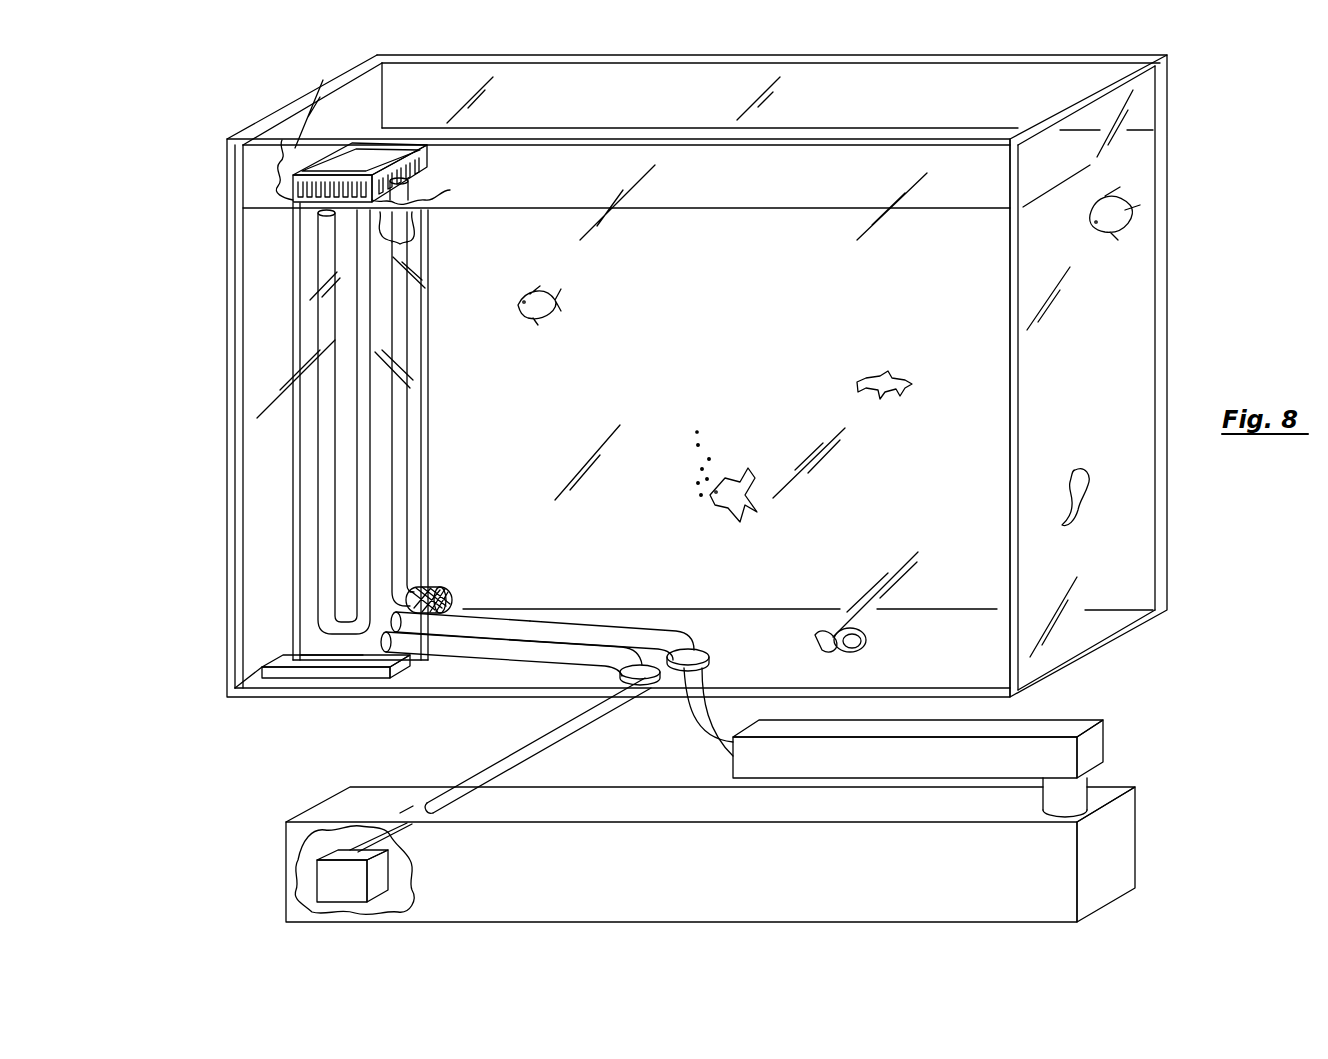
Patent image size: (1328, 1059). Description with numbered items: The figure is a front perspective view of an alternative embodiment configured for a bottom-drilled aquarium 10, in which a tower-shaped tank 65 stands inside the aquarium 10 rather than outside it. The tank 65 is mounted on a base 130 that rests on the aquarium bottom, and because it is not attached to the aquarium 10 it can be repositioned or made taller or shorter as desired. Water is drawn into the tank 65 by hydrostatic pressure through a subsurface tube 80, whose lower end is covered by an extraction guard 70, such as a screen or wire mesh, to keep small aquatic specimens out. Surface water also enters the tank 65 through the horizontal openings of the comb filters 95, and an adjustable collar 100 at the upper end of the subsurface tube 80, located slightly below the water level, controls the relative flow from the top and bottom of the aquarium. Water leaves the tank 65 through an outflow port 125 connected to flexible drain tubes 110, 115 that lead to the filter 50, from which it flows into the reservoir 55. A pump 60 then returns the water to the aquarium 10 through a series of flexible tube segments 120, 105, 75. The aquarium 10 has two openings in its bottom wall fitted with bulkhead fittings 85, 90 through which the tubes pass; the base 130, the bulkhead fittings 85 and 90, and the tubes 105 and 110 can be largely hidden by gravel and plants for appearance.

The aquarium 10 is at (1172, 305).
The filter 50 is at (1052, 722).
The reservoir 55 is at (374, 802).
The pump 60 is at (380, 873).
The tank 65 is at (295, 440).
The extraction guard 70 is at (447, 590).
The flexible tube segment 75 is at (330, 325).
The subsurface tube 80 is at (402, 449).
The bulkhead fitting 85 is at (703, 650).
The bulkhead fitting 90 is at (660, 690).
The comb filter 95 is at (343, 160).
The adjustable collar 100 is at (418, 186).
The flexible tube segment 105 is at (517, 648).
The flexible drain tube 110 is at (593, 633).
The flexible drain tube 115 is at (708, 718).
The flexible tube segment 120 is at (513, 762).
The outflow port 125 is at (490, 612).
The base 130 is at (282, 663).